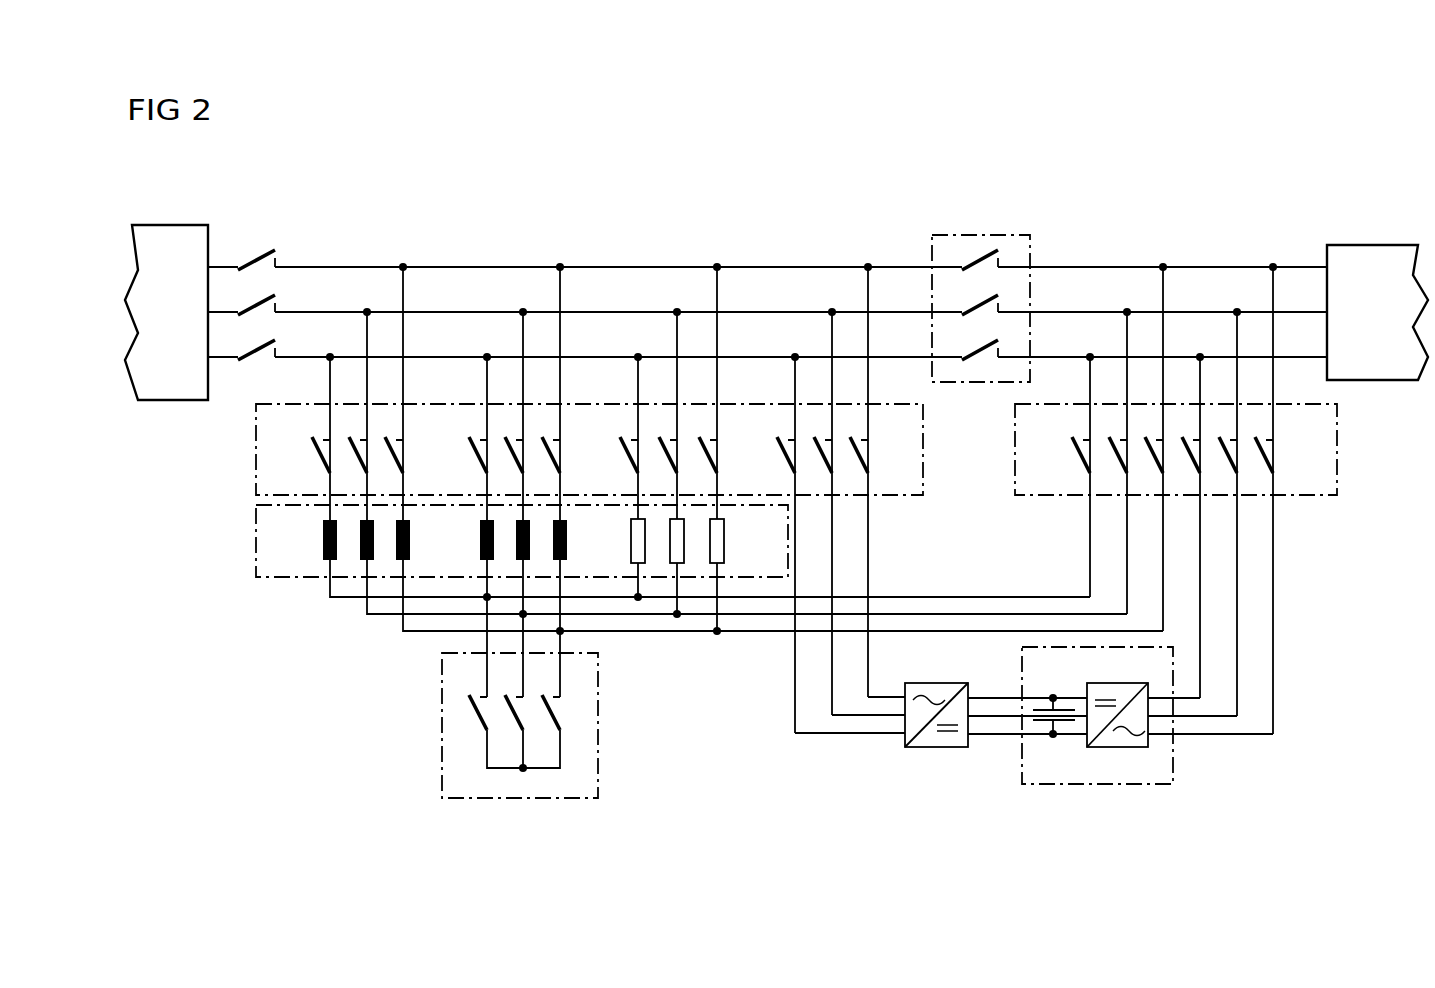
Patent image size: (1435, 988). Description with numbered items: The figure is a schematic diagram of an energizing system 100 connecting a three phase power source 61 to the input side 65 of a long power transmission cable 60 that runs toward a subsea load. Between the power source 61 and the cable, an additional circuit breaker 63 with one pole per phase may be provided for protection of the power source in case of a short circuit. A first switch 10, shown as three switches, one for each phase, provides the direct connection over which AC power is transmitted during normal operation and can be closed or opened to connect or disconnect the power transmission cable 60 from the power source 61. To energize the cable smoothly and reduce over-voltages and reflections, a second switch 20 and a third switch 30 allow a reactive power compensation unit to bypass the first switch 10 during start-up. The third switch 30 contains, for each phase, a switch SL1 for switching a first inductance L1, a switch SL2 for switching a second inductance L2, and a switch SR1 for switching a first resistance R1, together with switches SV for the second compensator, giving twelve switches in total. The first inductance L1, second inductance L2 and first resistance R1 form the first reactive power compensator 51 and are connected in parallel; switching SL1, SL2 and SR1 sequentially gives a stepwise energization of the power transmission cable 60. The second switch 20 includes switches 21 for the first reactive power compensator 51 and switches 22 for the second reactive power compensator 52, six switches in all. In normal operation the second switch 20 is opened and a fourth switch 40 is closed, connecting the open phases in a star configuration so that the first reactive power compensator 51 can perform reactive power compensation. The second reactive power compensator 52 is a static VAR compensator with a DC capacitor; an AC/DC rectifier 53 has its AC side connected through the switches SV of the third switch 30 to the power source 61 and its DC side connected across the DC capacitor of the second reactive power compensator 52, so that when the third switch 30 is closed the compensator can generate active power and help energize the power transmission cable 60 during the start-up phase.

The energizing system 100 is at (1272, 167).
The power source 61 is at (172, 225).
The circuit breaker 63 is at (258, 256).
The first switch 10 is at (983, 235).
The input side 65 is at (1313, 266).
The power transmission cable 60 is at (1383, 245).
The third switch 30 is at (256, 471).
The first reactive power compensator 51 is at (256, 546).
The switch for switching the first inductance SL1 is at (400, 462).
The switch for switching the second inductance SL2 is at (558, 462).
The switch for switching the first resistance SR1 is at (713, 462).
The switches for the second reactive power compensator SV is at (866, 461).
The first inductance L1 is at (323, 540).
The second inductance L2 is at (480, 541).
The first resistance R1 is at (724, 540).
The fourth switch 40 is at (442, 720).
The switches for switching the first reactive power compensator 21 is at (1082, 455).
The switches for switching the second reactive power compensator 22 is at (1270, 460).
The second switch 20 is at (1337, 452).
The AC/DC rectifier 53 is at (935, 747).
The second reactive power compensator 52 is at (1173, 763).